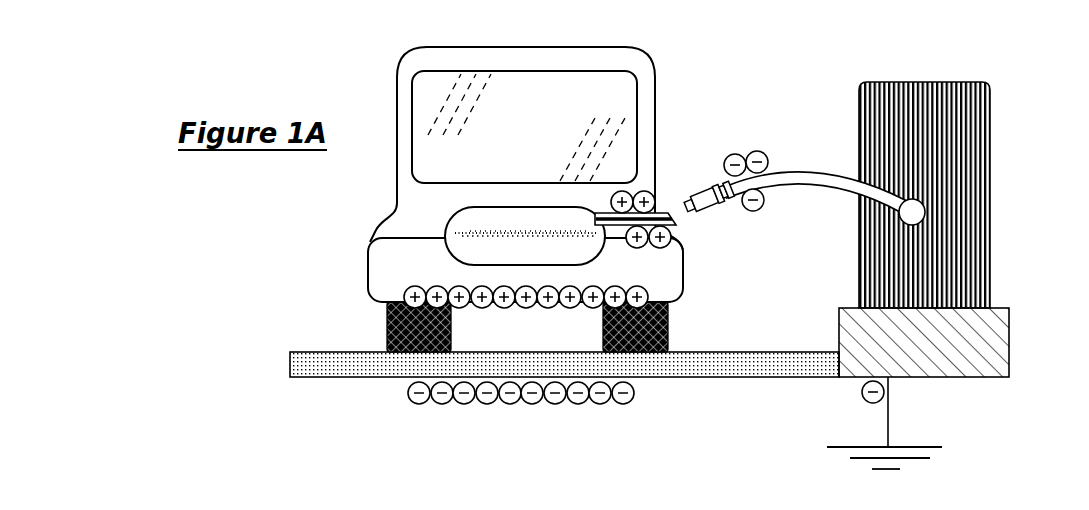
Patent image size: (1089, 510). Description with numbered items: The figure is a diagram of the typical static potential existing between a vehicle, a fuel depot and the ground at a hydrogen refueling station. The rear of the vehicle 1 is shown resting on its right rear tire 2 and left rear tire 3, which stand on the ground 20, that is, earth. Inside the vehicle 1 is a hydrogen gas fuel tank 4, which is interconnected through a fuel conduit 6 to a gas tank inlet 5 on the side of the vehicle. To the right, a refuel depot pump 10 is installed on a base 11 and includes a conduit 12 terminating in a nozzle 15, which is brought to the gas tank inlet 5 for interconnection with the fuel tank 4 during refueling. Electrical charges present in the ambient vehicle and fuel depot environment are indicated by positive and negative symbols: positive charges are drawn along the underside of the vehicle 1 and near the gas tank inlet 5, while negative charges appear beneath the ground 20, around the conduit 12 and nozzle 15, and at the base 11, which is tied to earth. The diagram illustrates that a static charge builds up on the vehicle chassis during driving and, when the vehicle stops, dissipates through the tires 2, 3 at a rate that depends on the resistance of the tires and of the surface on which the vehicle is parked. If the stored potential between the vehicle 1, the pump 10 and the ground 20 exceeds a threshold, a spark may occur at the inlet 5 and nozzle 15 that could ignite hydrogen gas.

The vehicle 1 is at (655, 97).
The right rear tire 2 is at (667, 327).
The left rear tire 3 is at (388, 330).
The hydrogen gas fuel tank 4 is at (527, 235).
The gas tank inlet 5 is at (670, 212).
The fuel conduit 6 is at (600, 212).
The refuel depot pump 10 is at (990, 118).
The base 11 is at (988, 305).
The conduit 12 is at (813, 172).
The nozzle 15 is at (705, 207).
The ground 20 is at (312, 377).